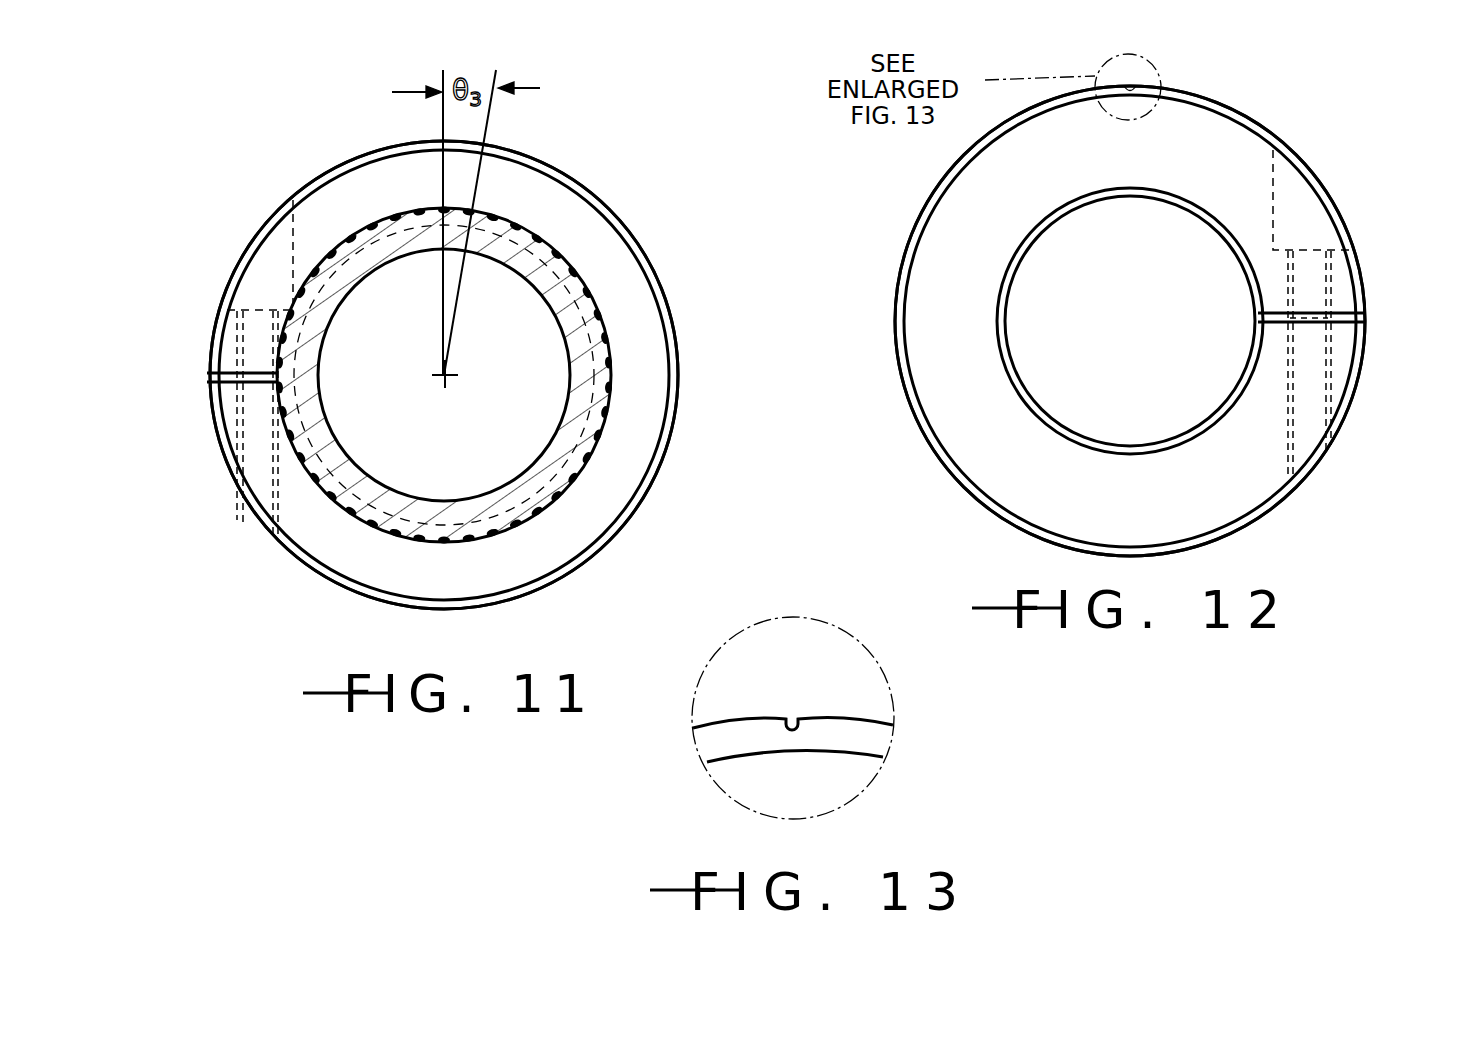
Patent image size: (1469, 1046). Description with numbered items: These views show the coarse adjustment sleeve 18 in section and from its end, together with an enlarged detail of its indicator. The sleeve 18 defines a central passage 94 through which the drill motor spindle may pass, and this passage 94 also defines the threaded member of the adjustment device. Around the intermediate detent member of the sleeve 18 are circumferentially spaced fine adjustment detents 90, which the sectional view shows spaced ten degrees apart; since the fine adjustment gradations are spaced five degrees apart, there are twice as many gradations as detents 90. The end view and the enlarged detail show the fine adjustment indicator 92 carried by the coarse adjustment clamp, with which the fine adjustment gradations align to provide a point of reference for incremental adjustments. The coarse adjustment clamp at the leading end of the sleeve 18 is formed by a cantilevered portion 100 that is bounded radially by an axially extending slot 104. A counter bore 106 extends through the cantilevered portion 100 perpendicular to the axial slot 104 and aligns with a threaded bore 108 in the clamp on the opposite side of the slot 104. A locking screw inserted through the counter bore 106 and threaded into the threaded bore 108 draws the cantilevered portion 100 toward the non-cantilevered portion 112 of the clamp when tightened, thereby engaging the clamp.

In FIG. 11, the coarse adjustment sleeve 18 is at (610, 124).
In FIG. 12, the coarse adjustment sleeve 18 is at (1342, 103).
In FIG. 11, the fine adjustment detents 90 is at (503, 217).
In FIG. 12, the fine adjustment indicator 92 is at (1131, 86).
In FIG. 13, the fine adjustment indicator 92 is at (795, 722).
In FIG. 11, the passage 94 is at (512, 372).
In FIG. 12, the passage 94 is at (1148, 258).
In FIG. 11, the cantilevered portion 100 is at (356, 185).
In FIG. 12, the cantilevered portion 100 is at (1205, 135).
In FIG. 11, the axially extending slot 104 is at (207, 378).
In FIG. 12, the axially extending slot 104 is at (1353, 313).
In FIG. 11, the counter bore 106 is at (262, 272).
In FIG. 12, the counter bore 106 is at (1317, 227).
In FIG. 11, the threaded bore 108 is at (250, 505).
In FIG. 12, the threaded bore 108 is at (1322, 428).
In FIG. 11, the non-cantilevered portion 112 is at (315, 542).
In FIG. 12, the non-cantilevered portion 112 is at (1280, 472).